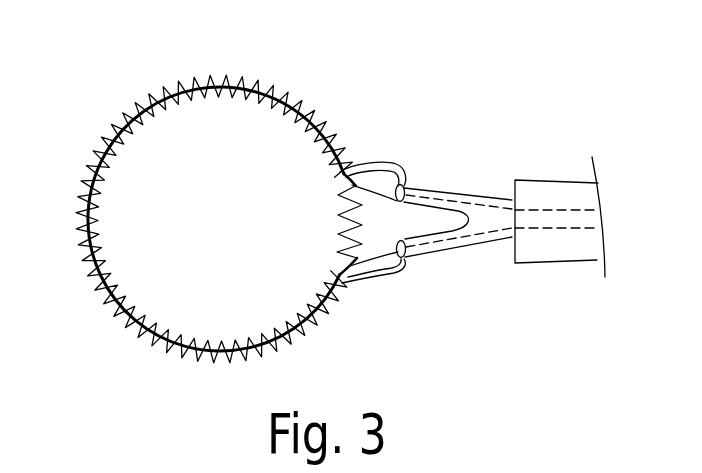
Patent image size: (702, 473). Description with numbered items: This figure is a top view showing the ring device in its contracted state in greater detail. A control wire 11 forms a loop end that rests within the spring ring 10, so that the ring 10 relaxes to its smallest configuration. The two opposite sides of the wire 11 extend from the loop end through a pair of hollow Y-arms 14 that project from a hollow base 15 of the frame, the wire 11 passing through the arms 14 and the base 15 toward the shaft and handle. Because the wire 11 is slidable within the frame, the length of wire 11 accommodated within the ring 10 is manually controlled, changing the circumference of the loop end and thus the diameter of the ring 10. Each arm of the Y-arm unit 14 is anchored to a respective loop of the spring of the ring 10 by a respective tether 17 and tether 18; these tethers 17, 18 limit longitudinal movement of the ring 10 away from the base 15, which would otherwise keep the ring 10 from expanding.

The spring ring 10 is at (218, 200).
The control wire 11 is at (257, 98).
The Y-arms 14 is at (447, 192).
The hollow base 15 is at (556, 180).
The tether 17 is at (392, 165).
The tether 18 is at (388, 282).